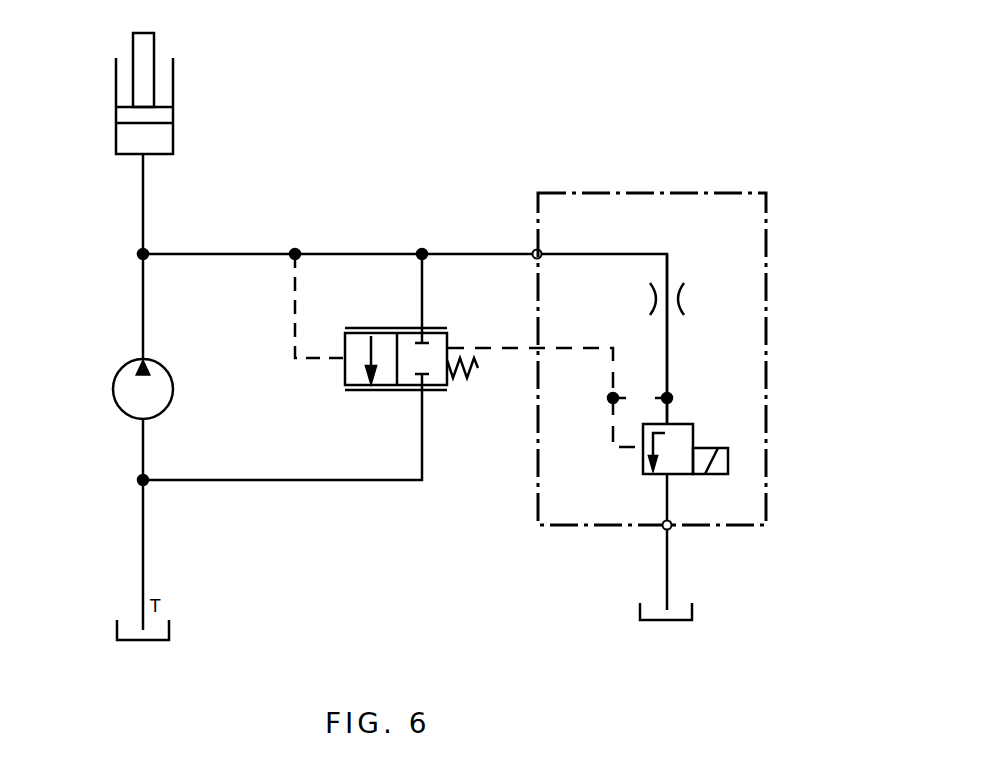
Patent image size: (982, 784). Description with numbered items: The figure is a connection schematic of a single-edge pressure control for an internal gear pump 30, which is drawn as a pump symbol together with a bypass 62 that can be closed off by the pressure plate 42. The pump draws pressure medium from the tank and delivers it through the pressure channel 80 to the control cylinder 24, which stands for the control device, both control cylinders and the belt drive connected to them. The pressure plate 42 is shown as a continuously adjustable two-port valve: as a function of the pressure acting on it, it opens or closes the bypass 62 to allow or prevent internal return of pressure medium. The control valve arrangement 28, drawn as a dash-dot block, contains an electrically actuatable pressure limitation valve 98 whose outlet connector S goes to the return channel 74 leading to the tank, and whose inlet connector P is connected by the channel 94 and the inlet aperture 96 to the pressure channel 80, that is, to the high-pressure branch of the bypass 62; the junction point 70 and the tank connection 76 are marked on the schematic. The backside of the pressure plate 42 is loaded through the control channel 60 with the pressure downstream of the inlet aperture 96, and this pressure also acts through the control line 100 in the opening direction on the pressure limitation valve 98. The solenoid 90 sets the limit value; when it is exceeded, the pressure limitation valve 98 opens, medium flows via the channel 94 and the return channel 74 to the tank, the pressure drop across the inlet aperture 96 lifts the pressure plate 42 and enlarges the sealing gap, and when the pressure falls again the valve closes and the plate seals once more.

The control cylinder 24 is at (167, 78).
The pressure channel 80 is at (142, 300).
The internal gear pump 30 is at (114, 383).
The bypass 62 is at (203, 480).
The pressure plate 42 is at (387, 368).
The control channel 60 is at (501, 368).
The connection port 70 is at (534, 251).
The control line 100 is at (610, 416).
The control valve arrangement 28 is at (766, 252).
The inlet aperture 96 is at (680, 293).
The channel 94 is at (667, 355).
The pressure limitation valve 98 is at (693, 430).
The solenoid 90 is at (725, 468).
The tank port 76 is at (672, 528).
The return channel 74 is at (668, 558).